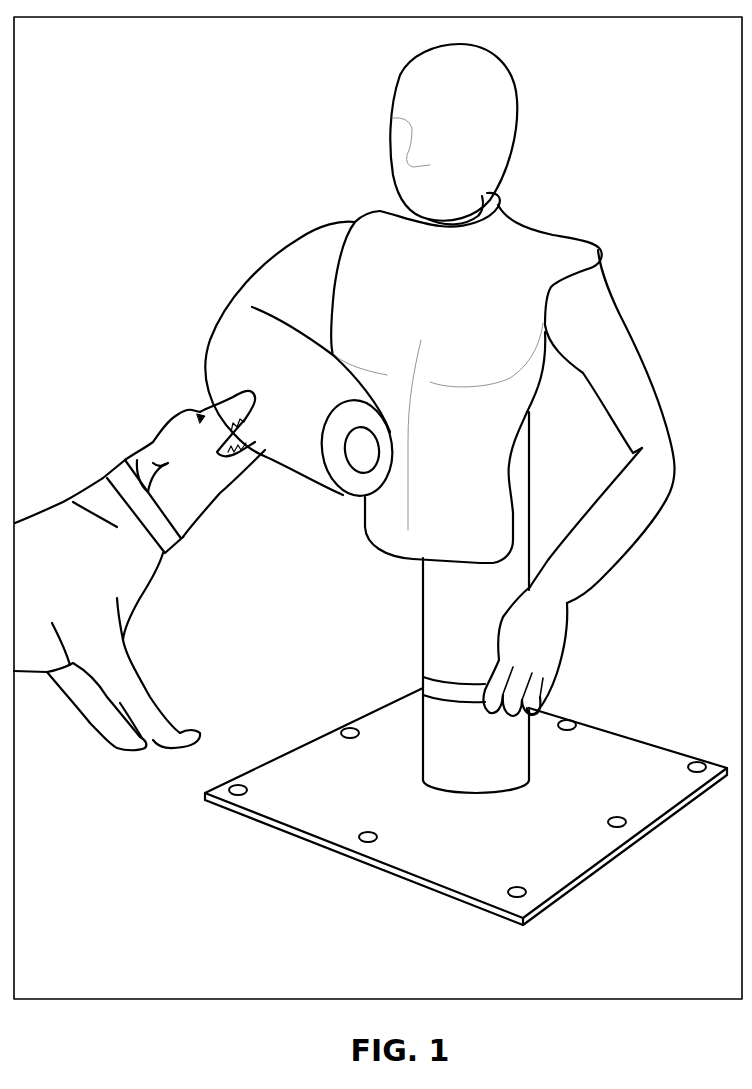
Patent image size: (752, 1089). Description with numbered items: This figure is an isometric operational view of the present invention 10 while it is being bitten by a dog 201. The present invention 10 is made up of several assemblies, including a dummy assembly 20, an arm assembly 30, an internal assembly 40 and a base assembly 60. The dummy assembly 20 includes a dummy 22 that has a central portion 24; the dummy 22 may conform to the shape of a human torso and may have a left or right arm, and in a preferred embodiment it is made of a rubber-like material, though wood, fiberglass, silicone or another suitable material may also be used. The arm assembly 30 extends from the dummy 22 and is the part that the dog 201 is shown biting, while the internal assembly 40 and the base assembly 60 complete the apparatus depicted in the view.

The present invention 10 is at (578, 170).
The dummy assembly 20 is at (357, 220).
The dummy 22 is at (400, 80).
The central portion 24 is at (480, 448).
The arm assembly 30 is at (230, 312).
The internal assembly 40 is at (425, 632).
The base assembly 60 is at (318, 842).
The dog 201 is at (130, 613).